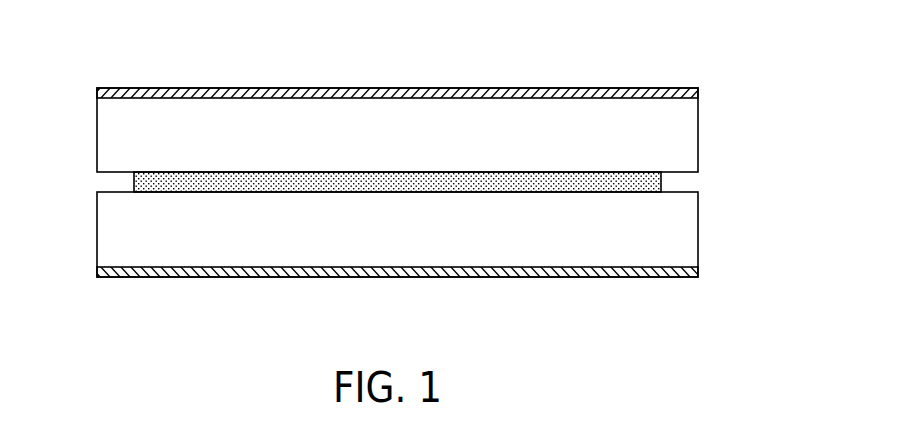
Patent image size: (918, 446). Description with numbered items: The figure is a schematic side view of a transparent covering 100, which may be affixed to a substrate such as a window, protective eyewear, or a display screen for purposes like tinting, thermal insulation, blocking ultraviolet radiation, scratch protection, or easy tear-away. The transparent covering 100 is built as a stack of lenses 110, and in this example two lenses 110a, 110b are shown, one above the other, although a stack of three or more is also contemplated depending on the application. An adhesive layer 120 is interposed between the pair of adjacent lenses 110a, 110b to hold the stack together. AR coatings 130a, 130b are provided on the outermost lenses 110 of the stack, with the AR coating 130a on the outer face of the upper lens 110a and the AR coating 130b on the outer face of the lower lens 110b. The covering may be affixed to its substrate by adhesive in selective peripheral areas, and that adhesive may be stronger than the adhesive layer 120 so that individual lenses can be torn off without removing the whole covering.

The transparent covering 100 is at (133, 22).
The lenses 110 is at (763, 89).
The lens 110a is at (689, 133).
The lens 110b is at (689, 227).
The adhesive layer 120 is at (133, 180).
The AR coating 130a is at (517, 88).
The AR coating 130b is at (596, 277).